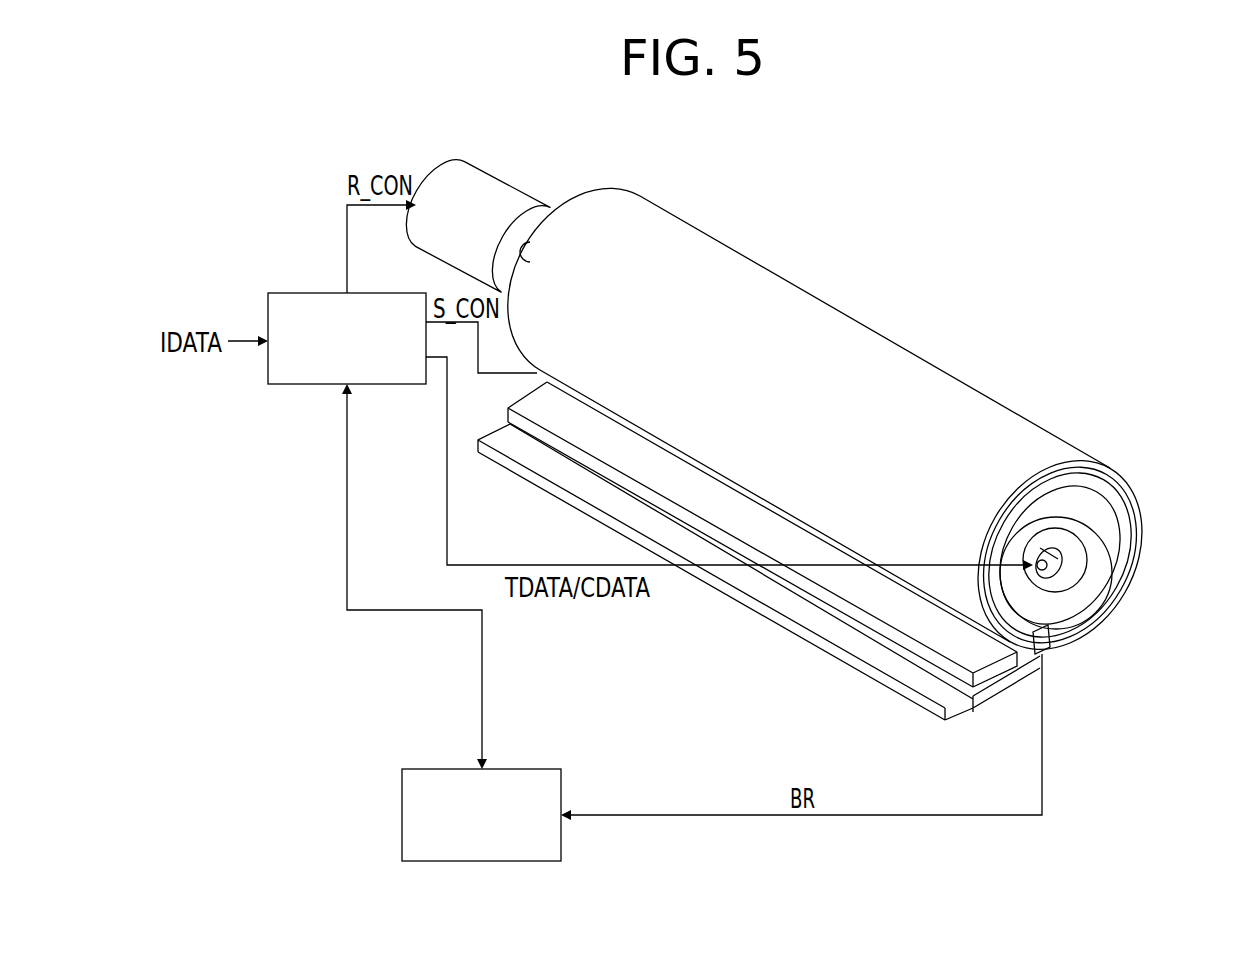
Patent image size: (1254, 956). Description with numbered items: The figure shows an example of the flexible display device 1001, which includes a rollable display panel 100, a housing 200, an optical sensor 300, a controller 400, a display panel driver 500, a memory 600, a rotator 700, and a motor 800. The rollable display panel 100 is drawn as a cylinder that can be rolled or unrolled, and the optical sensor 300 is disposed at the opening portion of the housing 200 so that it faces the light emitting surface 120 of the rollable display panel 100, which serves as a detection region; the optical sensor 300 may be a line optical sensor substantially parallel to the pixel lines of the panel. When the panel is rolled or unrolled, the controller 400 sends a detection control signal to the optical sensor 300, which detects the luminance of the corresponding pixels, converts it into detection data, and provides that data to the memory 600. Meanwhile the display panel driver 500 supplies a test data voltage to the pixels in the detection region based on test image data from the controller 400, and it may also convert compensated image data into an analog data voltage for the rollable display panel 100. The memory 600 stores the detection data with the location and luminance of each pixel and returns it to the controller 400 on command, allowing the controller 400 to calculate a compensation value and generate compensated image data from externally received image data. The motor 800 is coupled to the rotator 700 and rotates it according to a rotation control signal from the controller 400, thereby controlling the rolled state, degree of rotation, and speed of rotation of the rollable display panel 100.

The flexible display device 1001 is at (922, 289).
The rollable display panel 100 is at (1117, 505).
The housing 200 is at (1079, 462).
The display panel driver 500 is at (1052, 565).
The rotator 700 is at (1063, 567).
The motor 800 is at (483, 202).
The light emitting surface 120 is at (827, 618).
The optical sensor 300 is at (1063, 653).
The controller 400 is at (296, 385).
The memory 600 is at (402, 815).